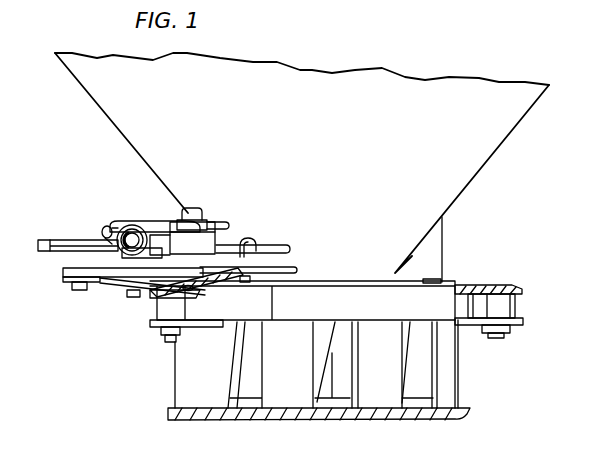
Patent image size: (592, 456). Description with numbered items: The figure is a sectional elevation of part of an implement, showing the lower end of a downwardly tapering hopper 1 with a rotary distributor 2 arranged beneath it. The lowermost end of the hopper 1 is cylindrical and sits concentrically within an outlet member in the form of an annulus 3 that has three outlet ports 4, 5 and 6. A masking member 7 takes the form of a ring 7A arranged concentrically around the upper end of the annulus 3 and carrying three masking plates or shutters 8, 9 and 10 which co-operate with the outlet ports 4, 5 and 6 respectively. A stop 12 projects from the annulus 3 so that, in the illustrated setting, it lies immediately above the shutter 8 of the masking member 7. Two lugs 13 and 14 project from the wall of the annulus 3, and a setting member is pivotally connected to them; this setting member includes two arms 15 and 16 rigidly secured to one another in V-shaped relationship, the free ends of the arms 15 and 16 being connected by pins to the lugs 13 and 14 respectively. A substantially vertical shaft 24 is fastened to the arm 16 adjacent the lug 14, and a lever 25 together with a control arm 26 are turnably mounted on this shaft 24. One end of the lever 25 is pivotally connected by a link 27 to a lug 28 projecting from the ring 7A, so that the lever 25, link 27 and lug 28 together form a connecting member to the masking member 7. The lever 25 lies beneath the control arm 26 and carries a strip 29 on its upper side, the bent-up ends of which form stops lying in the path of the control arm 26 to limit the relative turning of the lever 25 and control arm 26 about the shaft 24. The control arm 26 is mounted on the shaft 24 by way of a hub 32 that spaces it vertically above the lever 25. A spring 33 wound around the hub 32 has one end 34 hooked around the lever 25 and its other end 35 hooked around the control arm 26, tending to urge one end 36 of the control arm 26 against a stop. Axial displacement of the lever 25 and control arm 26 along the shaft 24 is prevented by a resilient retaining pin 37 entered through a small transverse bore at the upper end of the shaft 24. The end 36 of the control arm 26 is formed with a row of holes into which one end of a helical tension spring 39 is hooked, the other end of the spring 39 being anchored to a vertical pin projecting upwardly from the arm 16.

The hopper 1 is at (521, 86).
The rotary distributor 2 is at (470, 410).
The annulus 3 is at (176, 393).
The outlet port 4 is at (418, 402).
The outlet port 5 is at (343, 400).
The outlet port 6 is at (250, 410).
The masking member 7 is at (290, 246).
The ring 7A is at (237, 325).
The masking plate or shutter 8 is at (458, 385).
The masking plate or shutter 9 is at (383, 409).
The masking plate or shutter 10 is at (293, 409).
The stop 12 is at (437, 281).
The lug 13 is at (523, 321).
The lug 14 is at (162, 331).
The arm 15 is at (505, 288).
The arm 16 is at (205, 290).
The shaft 24 is at (195, 210).
The lever 25 is at (297, 271).
The control arm 26 is at (290, 246).
The link 27 is at (62, 279).
The lug 28 is at (125, 297).
The strip 29 is at (133, 266).
The hub 32 is at (228, 228).
The spring 33 is at (190, 262).
The spring end 34 is at (250, 284).
The spring end 35 is at (250, 239).
The control arm end 36 is at (62, 241).
The resilient retaining pin 37 is at (130, 222).
The helical tension spring 39 is at (103, 228).